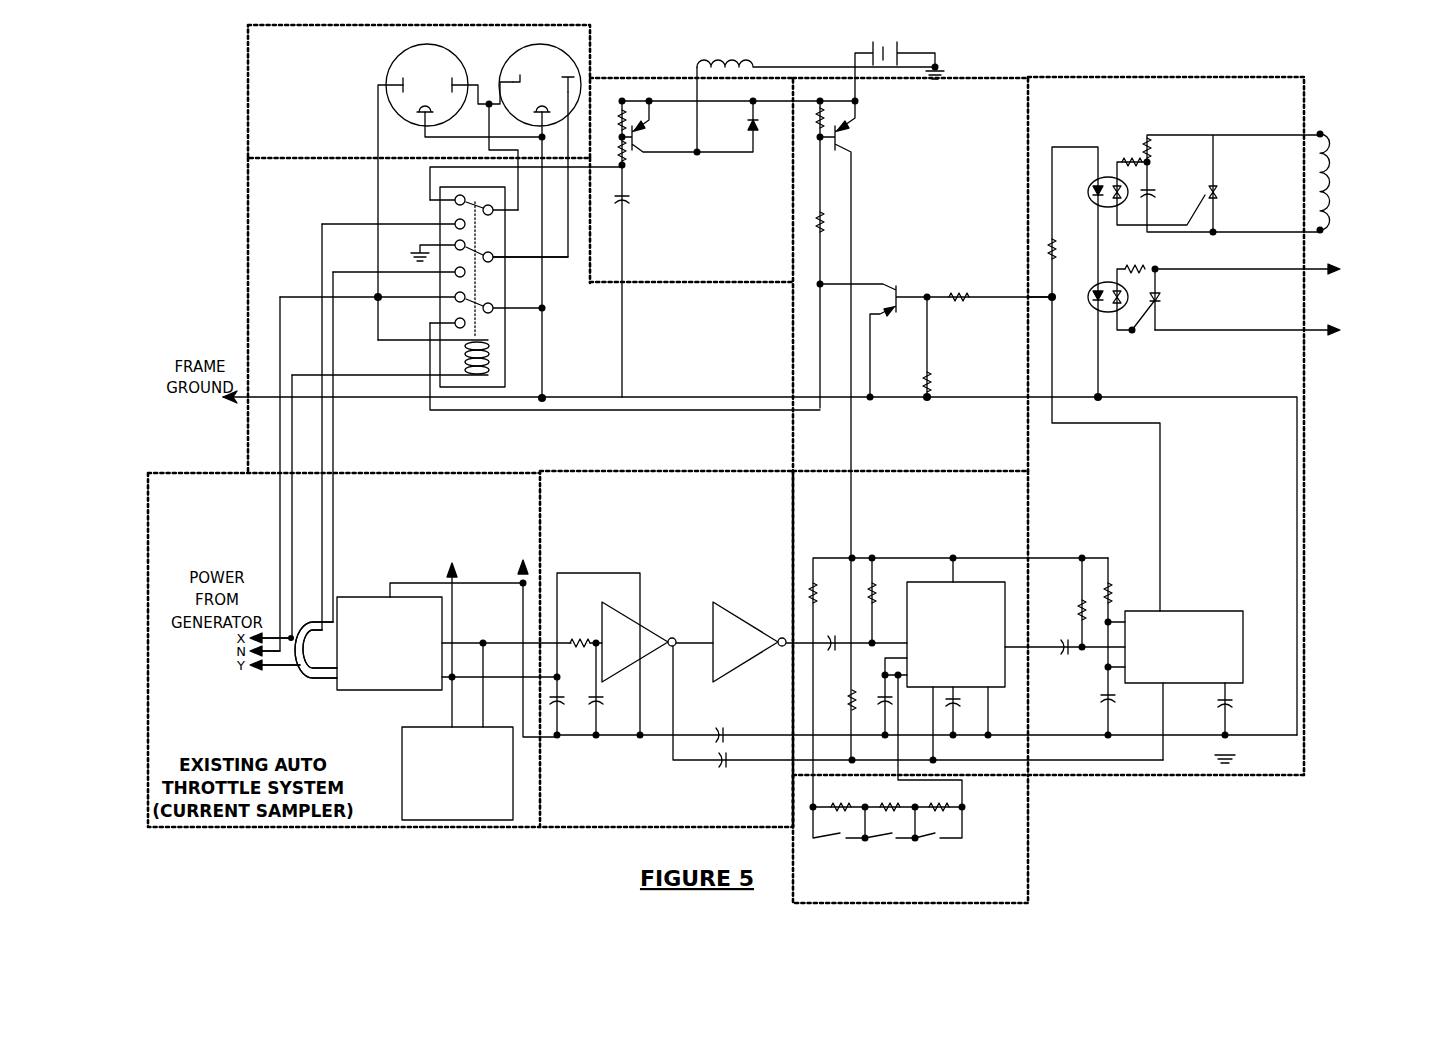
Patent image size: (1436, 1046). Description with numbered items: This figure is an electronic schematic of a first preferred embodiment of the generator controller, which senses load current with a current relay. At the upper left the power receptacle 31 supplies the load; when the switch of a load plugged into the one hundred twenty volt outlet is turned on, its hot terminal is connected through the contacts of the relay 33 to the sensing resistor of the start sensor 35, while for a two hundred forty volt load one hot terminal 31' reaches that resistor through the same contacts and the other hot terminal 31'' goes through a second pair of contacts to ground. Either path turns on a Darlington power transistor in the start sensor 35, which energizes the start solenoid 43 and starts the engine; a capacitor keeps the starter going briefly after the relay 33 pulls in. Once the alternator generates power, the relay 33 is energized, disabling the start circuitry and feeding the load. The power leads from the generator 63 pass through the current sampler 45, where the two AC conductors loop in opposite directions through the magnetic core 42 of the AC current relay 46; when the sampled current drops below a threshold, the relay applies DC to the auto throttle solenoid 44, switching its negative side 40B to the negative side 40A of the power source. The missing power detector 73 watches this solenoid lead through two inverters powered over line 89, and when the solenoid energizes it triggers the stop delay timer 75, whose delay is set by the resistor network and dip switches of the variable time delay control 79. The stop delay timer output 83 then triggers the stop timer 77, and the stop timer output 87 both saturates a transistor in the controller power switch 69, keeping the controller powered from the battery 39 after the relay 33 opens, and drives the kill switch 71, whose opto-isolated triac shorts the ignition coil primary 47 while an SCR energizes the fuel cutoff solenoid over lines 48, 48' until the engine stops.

The power receptacle 31 is at (424, 213).
The hot terminal of 240 V receptacle 31' is at (446, 85).
The other hot terminal of 240 V receptacle 31'' is at (567, 86).
The relay 33 is at (507, 340).
The start sensor 35 is at (697, 250).
The battery 39 is at (865, 48).
The negative side of the power source 40A is at (400, 578).
The negative side of the solenoid power 40B is at (487, 670).
The magnetic core 42 is at (318, 683).
The start solenoid 43 is at (695, 65).
The auto throttle solenoid 44 is at (393, 772).
The current sampler 45 is at (534, 332).
The AC current relay 46 is at (377, 693).
The coil primary 47 is at (1338, 144).
The fuel cutoff solenoid line 48 is at (1247, 287).
The fuel cutoff solenoid line 48' is at (1247, 346).
The power from generator leads 63 is at (273, 673).
The controller power switch 69 is at (973, 118).
The kill switch 71 is at (1231, 408).
The missing power detector 73 is at (691, 503).
The stop delay timer 75 is at (978, 611).
The stop timer 77 is at (1174, 536).
The variable time delay control 79 is at (1000, 805).
The stop delay timer output 83 is at (1037, 652).
The stop timer output 87 is at (1165, 485).
The power line 89 is at (1056, 555).